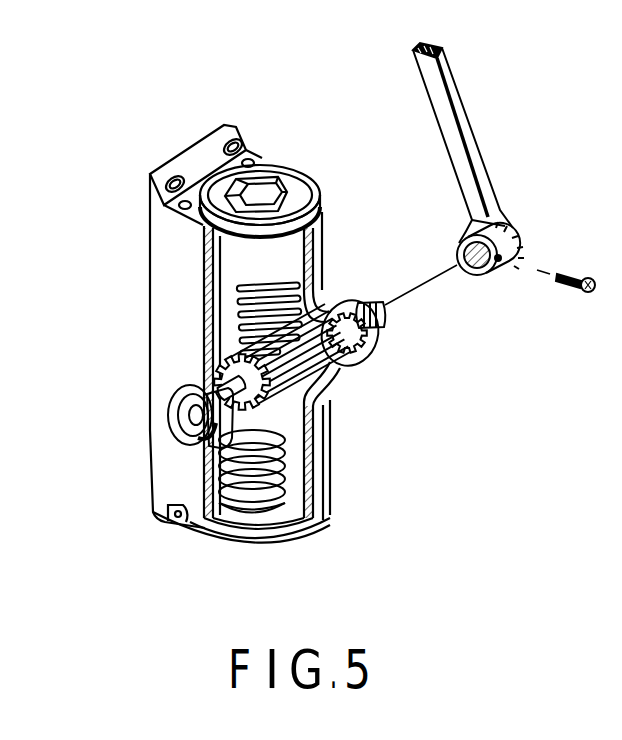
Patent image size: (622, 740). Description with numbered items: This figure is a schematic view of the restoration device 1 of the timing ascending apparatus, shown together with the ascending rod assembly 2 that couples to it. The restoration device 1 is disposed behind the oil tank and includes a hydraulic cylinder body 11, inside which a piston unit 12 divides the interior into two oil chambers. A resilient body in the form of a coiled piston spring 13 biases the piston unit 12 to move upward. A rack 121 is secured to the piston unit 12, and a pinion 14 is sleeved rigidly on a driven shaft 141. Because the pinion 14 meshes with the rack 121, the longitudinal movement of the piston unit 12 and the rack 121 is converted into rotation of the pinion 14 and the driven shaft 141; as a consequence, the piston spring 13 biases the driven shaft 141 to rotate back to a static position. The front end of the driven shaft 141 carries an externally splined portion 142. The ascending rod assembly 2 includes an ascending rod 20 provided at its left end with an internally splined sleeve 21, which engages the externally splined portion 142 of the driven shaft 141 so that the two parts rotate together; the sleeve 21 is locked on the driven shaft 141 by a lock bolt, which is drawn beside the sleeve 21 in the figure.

The restoration device 1 is at (258, 120).
The ascending rod assembly 2 is at (490, 172).
The hydraulic cylinder body 11 is at (282, 476).
The piston unit 12 is at (262, 271).
The coiled piston spring 13 is at (272, 510).
The pinion 14 is at (327, 387).
The rack 121 is at (245, 322).
The driven shaft 141 is at (340, 362).
The externally splined portion 142 is at (366, 300).
The ascending rod 20 is at (448, 78).
The internally splined sleeve 21 is at (493, 272).